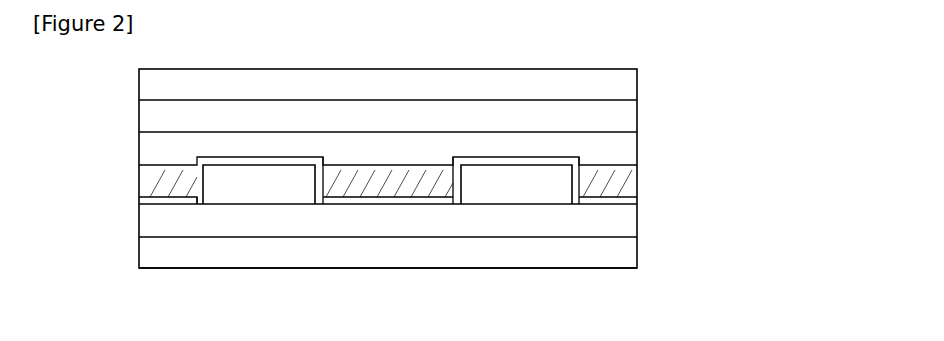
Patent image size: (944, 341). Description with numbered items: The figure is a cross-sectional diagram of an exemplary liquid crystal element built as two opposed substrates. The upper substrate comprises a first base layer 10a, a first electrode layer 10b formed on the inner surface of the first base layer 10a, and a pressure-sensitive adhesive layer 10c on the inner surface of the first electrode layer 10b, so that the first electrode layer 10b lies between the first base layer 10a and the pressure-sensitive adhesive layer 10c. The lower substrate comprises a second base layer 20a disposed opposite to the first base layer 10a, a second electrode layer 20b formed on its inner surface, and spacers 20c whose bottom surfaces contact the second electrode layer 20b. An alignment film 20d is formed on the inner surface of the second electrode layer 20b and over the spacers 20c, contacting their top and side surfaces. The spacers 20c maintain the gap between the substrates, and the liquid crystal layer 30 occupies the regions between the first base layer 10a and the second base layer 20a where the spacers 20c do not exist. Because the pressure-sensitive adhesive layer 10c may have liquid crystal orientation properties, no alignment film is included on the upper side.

The first base layer 10a is at (640, 85).
The first electrode layer 10b is at (640, 119).
The pressure-sensitive adhesive layer 10c is at (640, 148).
The liquid crystal layer 30 is at (640, 177).
The alignment film 20d is at (640, 203).
The second electrode layer 20b is at (640, 227).
The second base layer 20a is at (640, 253).
The spacer 20c is at (260, 187).